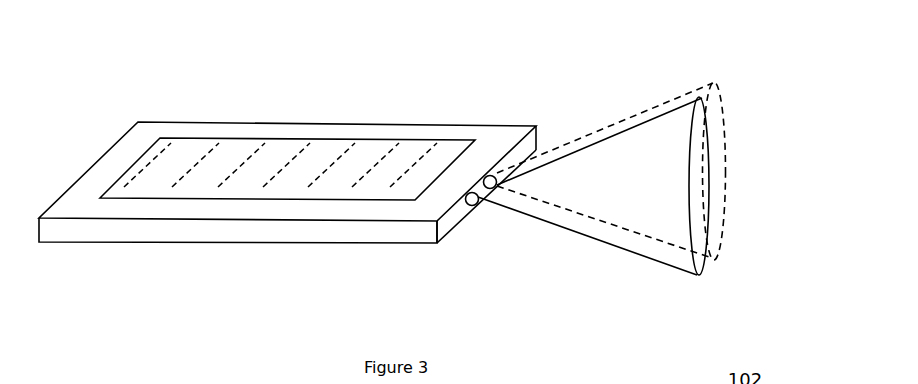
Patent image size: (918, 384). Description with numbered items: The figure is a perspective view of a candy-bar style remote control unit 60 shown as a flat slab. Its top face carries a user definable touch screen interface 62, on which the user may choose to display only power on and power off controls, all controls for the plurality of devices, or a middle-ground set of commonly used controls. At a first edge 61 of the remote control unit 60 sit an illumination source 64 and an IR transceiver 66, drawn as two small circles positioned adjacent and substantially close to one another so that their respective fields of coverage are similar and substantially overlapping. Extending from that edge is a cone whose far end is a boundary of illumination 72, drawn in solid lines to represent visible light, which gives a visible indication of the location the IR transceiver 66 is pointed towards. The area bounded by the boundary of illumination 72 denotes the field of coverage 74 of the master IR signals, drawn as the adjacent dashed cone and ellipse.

The remote control unit 60 is at (278, 110).
The first edge 61 is at (442, 229).
The touch screen interface 62 is at (327, 155).
The illumination source 64 is at (473, 206).
The IR transceiver 66 is at (492, 176).
The boundary of illumination 72 is at (700, 274).
The field of coverage 74 is at (718, 95).